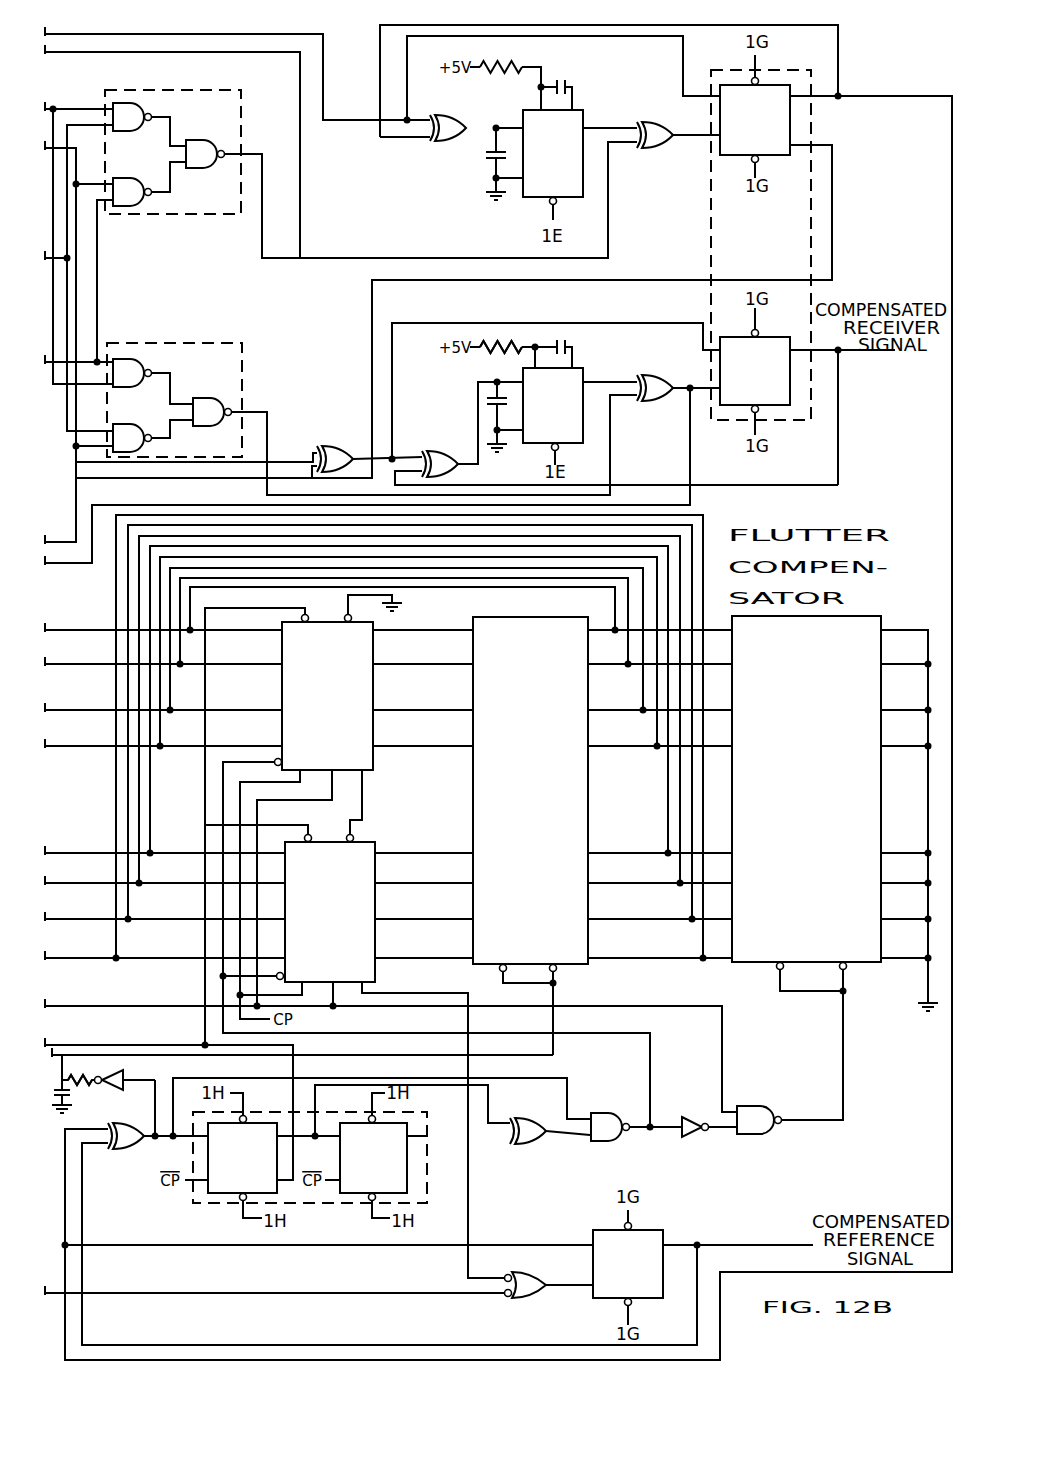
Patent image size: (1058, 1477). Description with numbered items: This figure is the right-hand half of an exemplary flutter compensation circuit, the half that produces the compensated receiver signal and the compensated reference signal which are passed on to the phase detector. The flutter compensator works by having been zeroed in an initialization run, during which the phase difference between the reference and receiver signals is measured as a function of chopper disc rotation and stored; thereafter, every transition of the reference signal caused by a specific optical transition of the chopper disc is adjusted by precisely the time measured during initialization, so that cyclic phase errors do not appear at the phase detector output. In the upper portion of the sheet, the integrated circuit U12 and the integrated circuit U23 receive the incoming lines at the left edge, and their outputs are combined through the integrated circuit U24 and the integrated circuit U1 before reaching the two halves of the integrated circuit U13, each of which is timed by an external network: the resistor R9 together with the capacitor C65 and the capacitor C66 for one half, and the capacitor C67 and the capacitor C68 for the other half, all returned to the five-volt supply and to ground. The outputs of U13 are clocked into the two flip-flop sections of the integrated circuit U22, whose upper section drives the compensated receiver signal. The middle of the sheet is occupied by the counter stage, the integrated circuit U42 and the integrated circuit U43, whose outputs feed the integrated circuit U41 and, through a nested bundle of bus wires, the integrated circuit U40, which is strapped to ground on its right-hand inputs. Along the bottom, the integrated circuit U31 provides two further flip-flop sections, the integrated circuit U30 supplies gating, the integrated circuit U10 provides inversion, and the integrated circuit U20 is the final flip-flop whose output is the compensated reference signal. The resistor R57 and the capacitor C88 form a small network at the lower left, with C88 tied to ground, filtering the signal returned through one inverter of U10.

The IC 74LS00 U12 is at (172, 214).
The IC 74LS00 U23 is at (188, 343).
The IC 74LS86 U24 is at (494, 289).
The IC 74LS86 U1 is at (387, 634).
The IC 74221 U13 is at (553, 279).
The IC 74LS74 U22 is at (711, 207).
The capacitor C67 is at (476, 156).
The capacitor C68 is at (567, 75).
The capacitor C65 is at (583, 346).
The capacitor C66 is at (472, 401).
The resistor R9 is at (501, 356).
The IC 74LS669 U42 is at (328, 691).
The IC 74LS669 U43 is at (329, 912).
The IC 74LS244 U41 is at (529, 804).
The IC 74LS244 U40 is at (806, 802).
The IC 74LS74 U31 is at (193, 1200).
The IC 74LS00 U30 is at (638, 1206).
The IC 74LS04 U10 is at (401, 1110).
The IC 74LS74 U20 is at (626, 1264).
The resistor R57 is at (73, 1071).
The capacitor C88 is at (78, 1094).